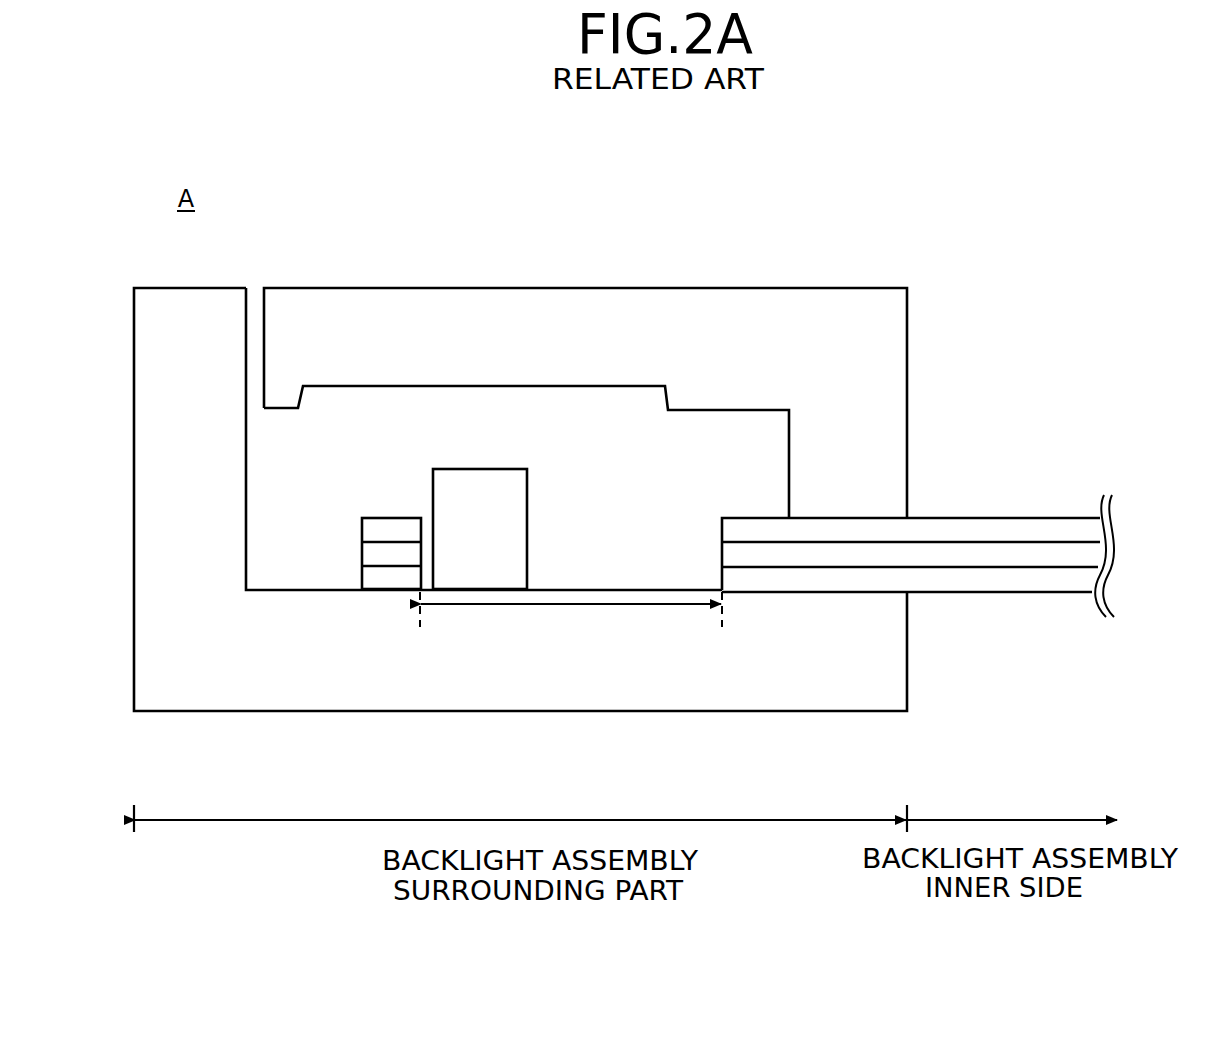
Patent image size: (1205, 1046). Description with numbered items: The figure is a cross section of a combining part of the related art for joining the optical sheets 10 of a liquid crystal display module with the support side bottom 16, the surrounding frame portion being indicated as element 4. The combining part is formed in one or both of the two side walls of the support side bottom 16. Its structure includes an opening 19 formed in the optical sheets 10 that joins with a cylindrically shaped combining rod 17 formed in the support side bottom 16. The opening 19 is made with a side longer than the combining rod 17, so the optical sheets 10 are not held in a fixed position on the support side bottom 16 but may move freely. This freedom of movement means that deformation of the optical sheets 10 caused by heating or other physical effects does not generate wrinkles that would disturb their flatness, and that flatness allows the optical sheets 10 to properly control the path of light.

The mold frame 4 is at (895, 336).
The optical sheets 10 is at (963, 585).
The support side bottom 16 is at (565, 702).
The combining rod 17 is at (443, 489).
The opening 19 is at (571, 619).